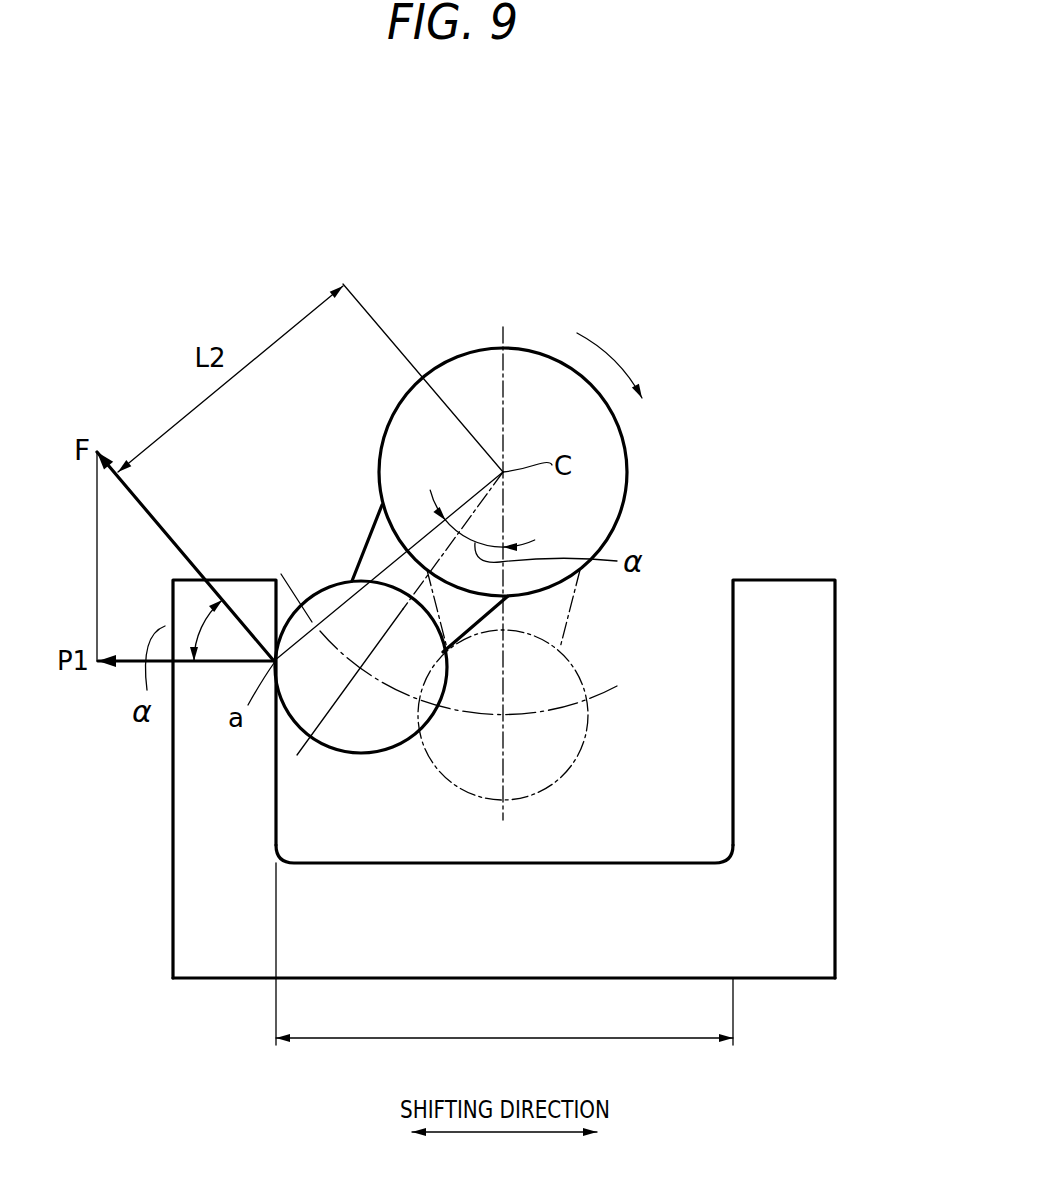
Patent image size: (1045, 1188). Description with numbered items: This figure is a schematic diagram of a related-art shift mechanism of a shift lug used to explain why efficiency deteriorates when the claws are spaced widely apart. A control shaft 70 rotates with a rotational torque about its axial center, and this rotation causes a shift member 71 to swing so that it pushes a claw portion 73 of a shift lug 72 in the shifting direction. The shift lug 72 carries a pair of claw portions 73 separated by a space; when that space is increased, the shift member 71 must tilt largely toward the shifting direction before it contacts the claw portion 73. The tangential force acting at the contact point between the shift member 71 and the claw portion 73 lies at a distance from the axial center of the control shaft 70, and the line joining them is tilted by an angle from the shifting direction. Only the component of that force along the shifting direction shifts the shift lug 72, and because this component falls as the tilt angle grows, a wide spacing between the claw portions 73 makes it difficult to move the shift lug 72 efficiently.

The control shaft 70 is at (465, 372).
The shift member 71 is at (365, 740).
The shift lug 72 is at (783, 978).
The claw portion 73 is at (810, 642).